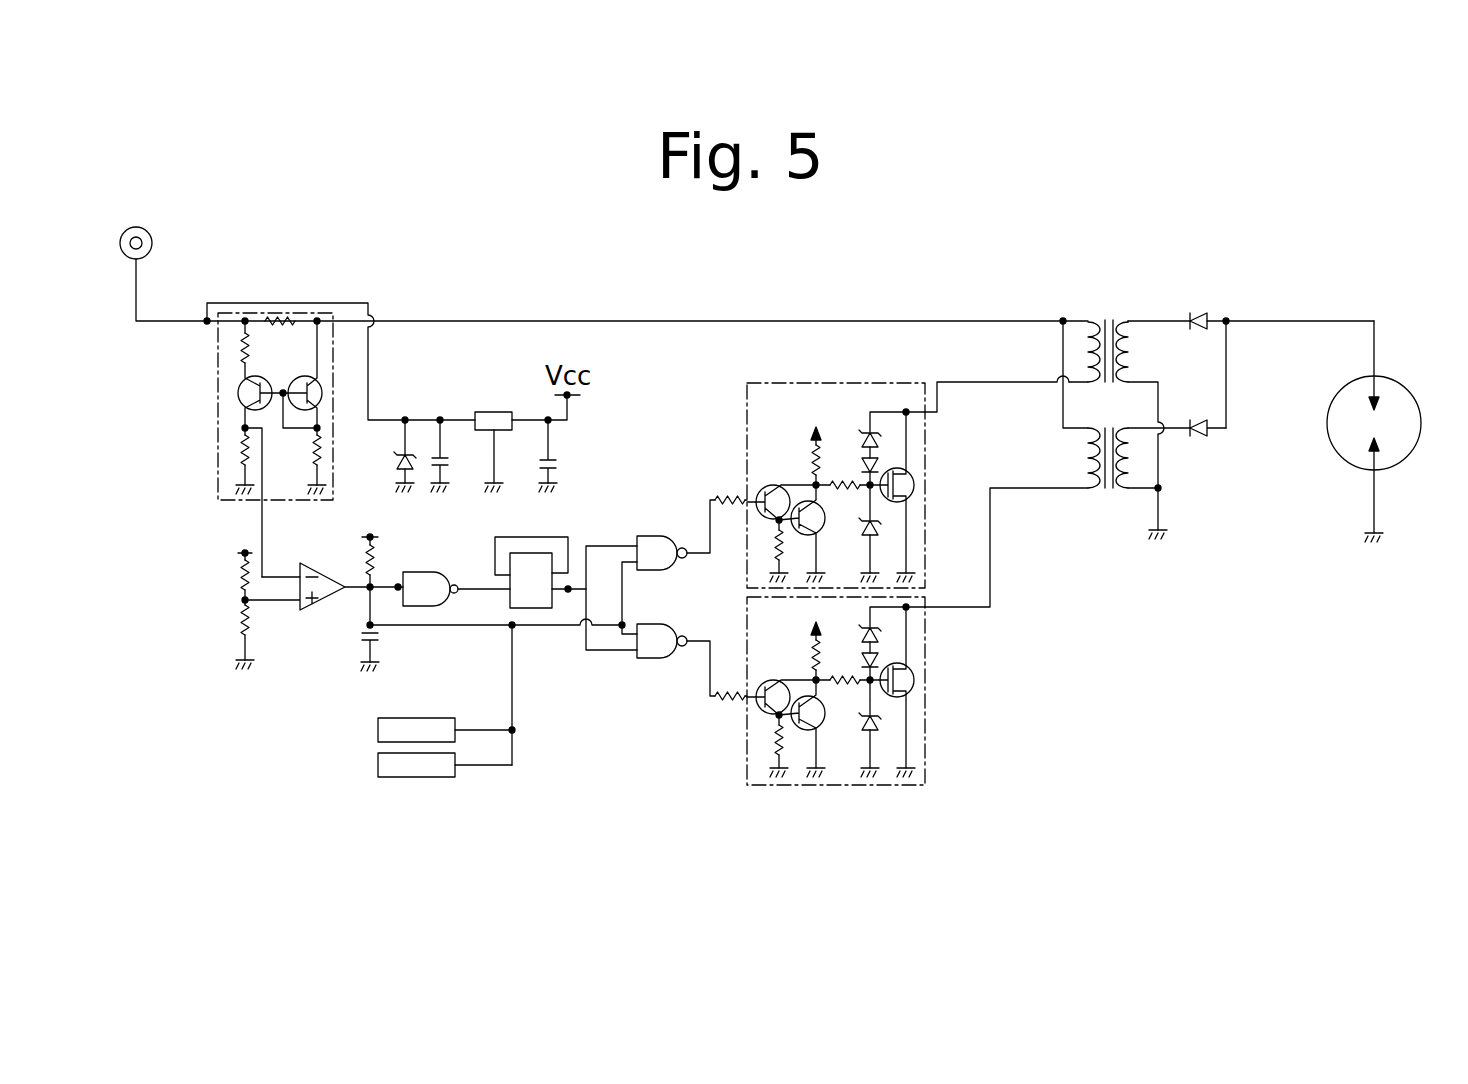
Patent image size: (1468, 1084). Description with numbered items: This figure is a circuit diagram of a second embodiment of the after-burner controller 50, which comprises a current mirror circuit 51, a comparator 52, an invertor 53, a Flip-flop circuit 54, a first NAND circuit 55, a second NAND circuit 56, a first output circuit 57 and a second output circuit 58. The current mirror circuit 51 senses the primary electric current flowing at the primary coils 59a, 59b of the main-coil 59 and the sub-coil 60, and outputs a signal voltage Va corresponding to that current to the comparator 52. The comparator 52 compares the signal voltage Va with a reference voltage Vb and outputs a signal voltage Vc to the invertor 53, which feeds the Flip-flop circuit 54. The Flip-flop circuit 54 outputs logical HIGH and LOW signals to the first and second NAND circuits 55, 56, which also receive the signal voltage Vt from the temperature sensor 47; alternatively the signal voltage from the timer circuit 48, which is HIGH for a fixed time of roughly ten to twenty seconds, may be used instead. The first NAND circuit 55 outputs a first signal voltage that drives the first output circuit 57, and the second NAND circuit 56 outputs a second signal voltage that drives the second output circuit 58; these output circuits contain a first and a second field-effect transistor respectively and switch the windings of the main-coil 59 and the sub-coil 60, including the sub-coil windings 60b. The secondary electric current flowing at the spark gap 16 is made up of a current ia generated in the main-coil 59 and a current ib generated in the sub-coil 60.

The spark gap 16 is at (1403, 460).
The temperature sensor 47 is at (378, 730).
The timer circuit 48 is at (378, 765).
The after-burner controller 50 is at (630, 768).
The current mirror circuit 51 is at (218, 412).
The comparator 52 is at (326, 606).
The invertor 53 is at (423, 572).
The Flip-flop circuit 54 is at (543, 553).
The first NAND circuit 55 is at (655, 530).
The second NAND circuit 56 is at (652, 660).
The first output circuit 57 is at (833, 383).
The second output circuit 58 is at (845, 787).
The main-coil 59 is at (535, 321).
The primary coil 59a is at (1083, 338).
The primary coil 59b is at (1128, 348).
The sub-coil 60 is at (1108, 500).
The sub-coil winding 60b is at (1083, 457).